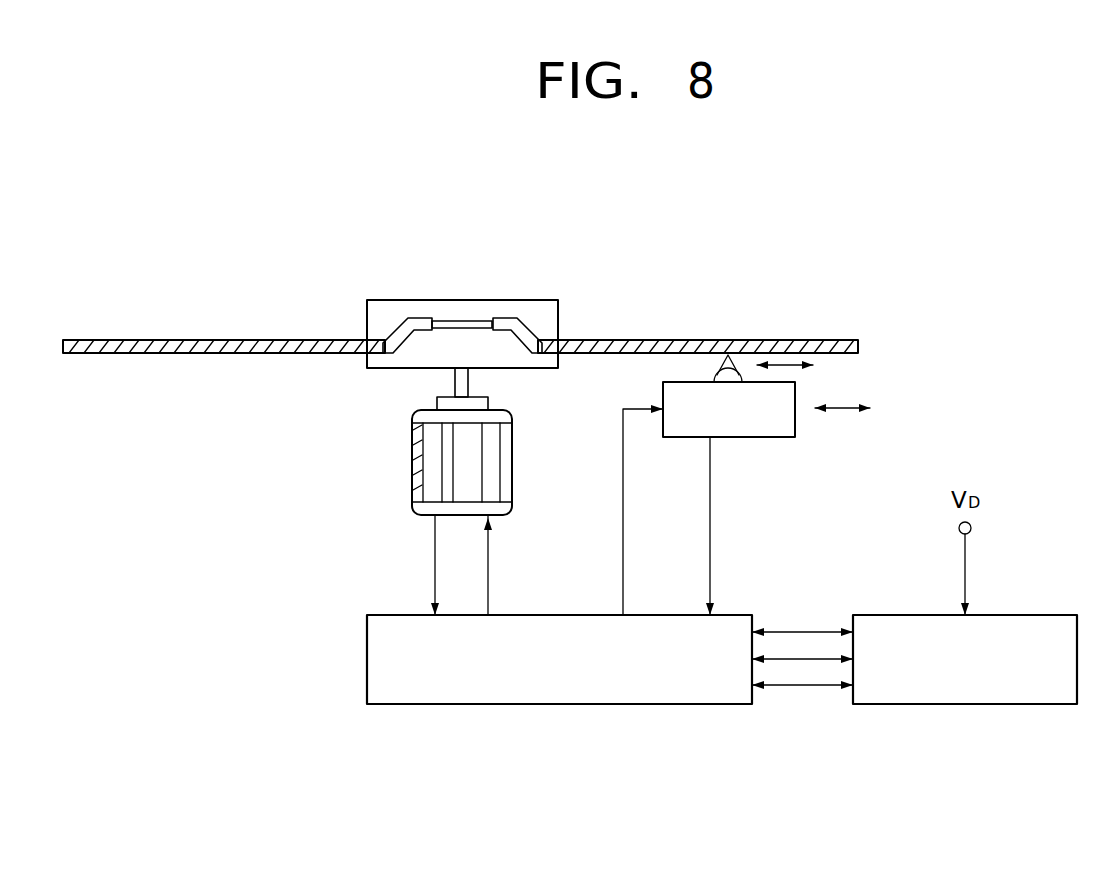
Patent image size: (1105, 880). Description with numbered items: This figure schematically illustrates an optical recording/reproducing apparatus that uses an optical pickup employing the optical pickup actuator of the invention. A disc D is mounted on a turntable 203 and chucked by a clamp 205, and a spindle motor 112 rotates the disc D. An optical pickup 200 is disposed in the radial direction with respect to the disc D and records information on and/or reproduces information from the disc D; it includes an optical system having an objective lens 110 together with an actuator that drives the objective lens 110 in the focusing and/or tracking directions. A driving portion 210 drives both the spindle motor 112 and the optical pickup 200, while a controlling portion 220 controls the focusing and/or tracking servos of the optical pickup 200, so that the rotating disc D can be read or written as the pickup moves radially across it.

The disc D is at (810, 340).
The clamp 205 is at (395, 308).
The turntable 203 is at (385, 358).
The spindle motor 112 is at (418, 461).
The objective lens 110 is at (722, 376).
The optical pickup 200 is at (762, 437).
The driving portion 210 is at (562, 704).
The controlling portion 220 is at (972, 704).